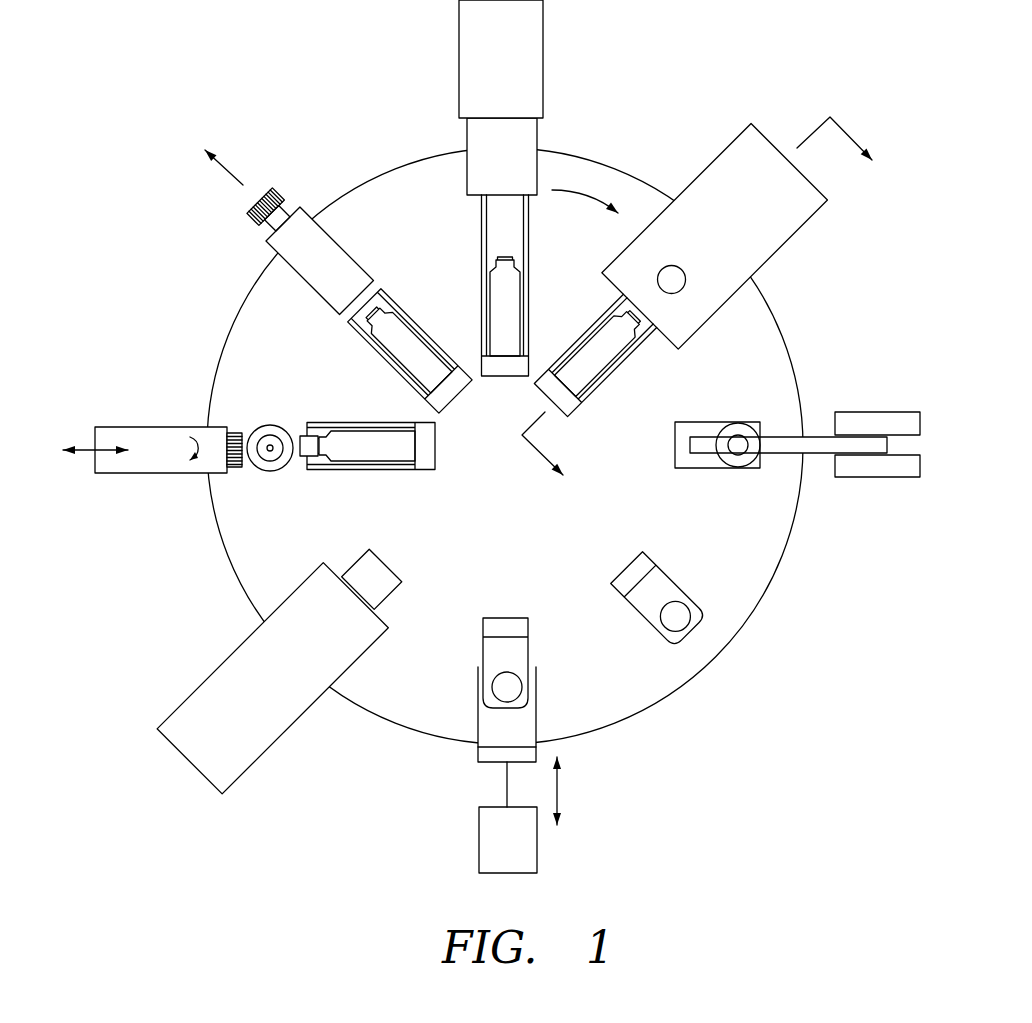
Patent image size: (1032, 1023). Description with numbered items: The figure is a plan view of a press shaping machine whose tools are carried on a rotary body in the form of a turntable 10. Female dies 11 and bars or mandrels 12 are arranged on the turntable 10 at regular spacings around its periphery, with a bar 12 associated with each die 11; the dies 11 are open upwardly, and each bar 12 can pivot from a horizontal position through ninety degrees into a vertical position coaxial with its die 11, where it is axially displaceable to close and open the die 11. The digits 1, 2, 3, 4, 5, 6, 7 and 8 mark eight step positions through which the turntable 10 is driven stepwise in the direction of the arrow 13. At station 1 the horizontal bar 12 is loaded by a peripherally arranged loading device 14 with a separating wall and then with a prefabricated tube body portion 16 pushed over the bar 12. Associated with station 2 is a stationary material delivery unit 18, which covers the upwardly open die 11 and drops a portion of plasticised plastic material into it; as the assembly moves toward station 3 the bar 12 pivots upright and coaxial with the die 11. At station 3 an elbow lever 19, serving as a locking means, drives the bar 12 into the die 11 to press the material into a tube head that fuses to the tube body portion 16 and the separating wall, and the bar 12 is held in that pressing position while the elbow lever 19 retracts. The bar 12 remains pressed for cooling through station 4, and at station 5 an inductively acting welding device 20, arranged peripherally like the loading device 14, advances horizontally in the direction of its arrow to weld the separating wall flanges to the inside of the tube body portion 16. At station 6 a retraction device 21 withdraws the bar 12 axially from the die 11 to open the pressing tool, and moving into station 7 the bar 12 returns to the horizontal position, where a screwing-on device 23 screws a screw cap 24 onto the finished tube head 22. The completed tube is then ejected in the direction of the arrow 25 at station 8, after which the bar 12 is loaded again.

The step position 1 is at (517, 156).
The step position 2 is at (708, 312).
The step position 3 is at (748, 468).
The step position 4 is at (688, 715).
The step position 5 is at (496, 724).
The step position 6 is at (236, 625).
The step position 7 is at (193, 410).
The step position 8 is at (315, 190).
The turntable 10 is at (608, 173).
The die 11 is at (272, 427).
The bar 12 is at (450, 315).
The arrow 13 is at (582, 198).
The loading device 14 is at (465, 52).
The tube body portion 16 is at (482, 235).
The material delivery unit 18 is at (800, 210).
The elbow lever 19 is at (812, 433).
The welding device 20 is at (523, 850).
The retraction device 21 is at (278, 728).
The tube head 22 is at (318, 465).
The screwing-on device 23 is at (112, 470).
The screw cap 24 is at (237, 473).
The arrow 25 is at (204, 150).